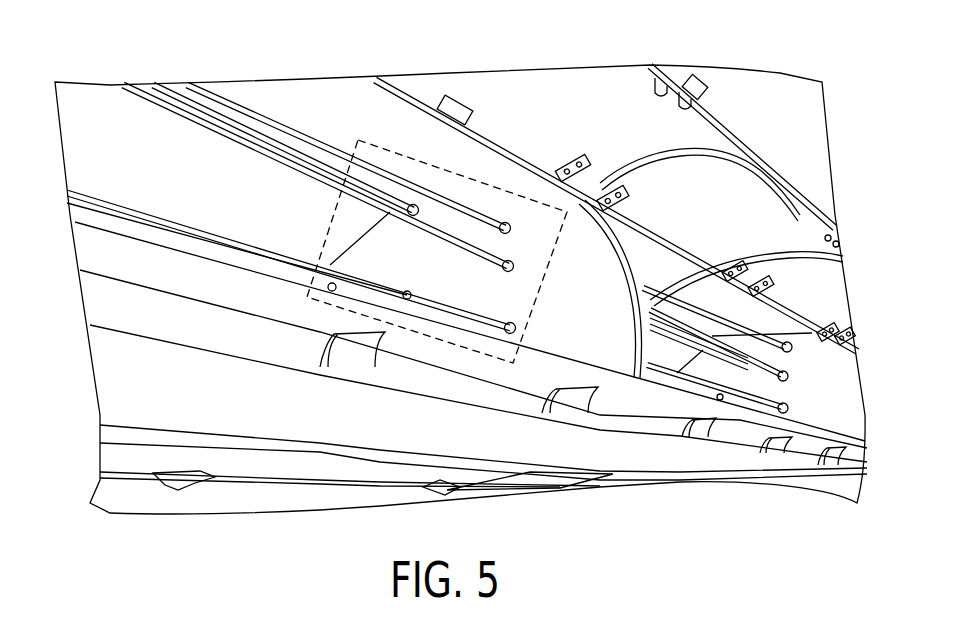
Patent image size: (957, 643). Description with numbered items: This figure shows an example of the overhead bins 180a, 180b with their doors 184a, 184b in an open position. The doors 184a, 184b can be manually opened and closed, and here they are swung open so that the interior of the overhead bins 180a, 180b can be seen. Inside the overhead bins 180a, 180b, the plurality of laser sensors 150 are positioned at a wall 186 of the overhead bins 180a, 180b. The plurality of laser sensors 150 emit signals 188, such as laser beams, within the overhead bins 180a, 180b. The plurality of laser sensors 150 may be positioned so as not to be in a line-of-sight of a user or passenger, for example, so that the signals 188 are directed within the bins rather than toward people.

The signals 188 is at (226, 86).
The plurality of laser sensors 150 is at (488, 170).
The door 184a is at (622, 89).
The door 184b is at (774, 184).
The wall 186 is at (589, 355).
The overhead bin 180a is at (165, 295).
The overhead bin 180b is at (741, 427).